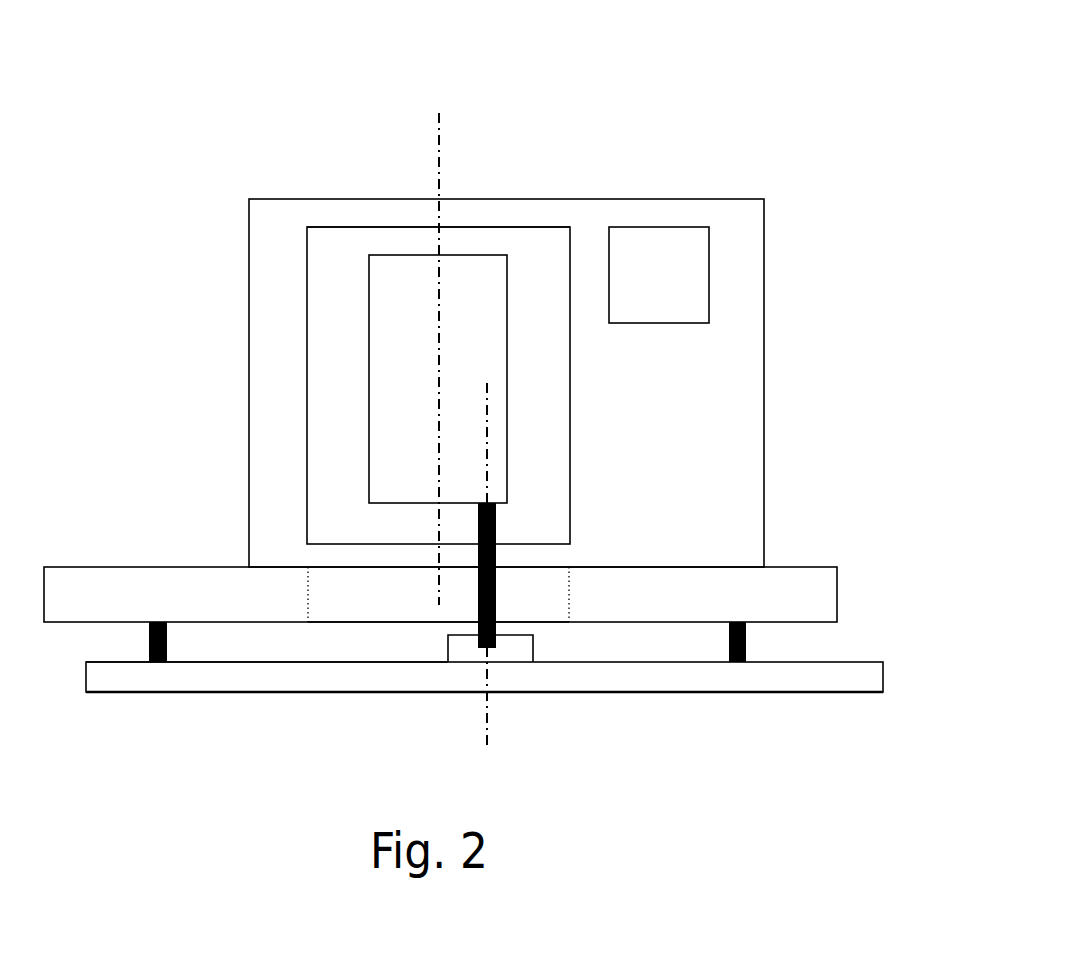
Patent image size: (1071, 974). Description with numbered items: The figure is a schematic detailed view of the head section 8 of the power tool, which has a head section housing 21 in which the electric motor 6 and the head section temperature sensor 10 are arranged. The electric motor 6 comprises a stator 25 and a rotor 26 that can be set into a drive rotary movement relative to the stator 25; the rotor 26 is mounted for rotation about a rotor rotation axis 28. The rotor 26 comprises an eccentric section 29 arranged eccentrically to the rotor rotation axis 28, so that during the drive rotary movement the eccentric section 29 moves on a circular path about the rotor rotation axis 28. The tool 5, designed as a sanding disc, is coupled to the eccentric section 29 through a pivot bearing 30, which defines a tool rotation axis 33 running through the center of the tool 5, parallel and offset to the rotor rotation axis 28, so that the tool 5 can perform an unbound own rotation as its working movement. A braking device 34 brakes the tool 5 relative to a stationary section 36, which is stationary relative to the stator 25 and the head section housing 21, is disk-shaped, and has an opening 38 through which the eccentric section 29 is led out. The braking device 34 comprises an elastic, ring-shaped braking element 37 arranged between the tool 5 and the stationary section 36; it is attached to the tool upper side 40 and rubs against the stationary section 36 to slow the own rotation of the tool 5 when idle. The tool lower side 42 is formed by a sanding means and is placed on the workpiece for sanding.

The tool 5 is at (873, 677).
The electric motor 6 is at (367, 226).
The head section 8 is at (218, 82).
The head section temperature sensor 10 is at (678, 238).
The head section housing 21 is at (747, 198).
The stator 25 is at (530, 242).
The rotor 26 is at (478, 266).
The rotor rotation axis 28 is at (437, 344).
The eccentric section 29 is at (497, 598).
The pivot bearing 30 is at (515, 655).
The tool rotation axis 33 is at (487, 554).
The braking device 34 is at (122, 643).
The stationary section 36 is at (172, 578).
The braking element 37 is at (167, 650).
The opening 38 is at (370, 613).
The tool upper side 40 is at (262, 662).
The tool lower side 42 is at (292, 692).